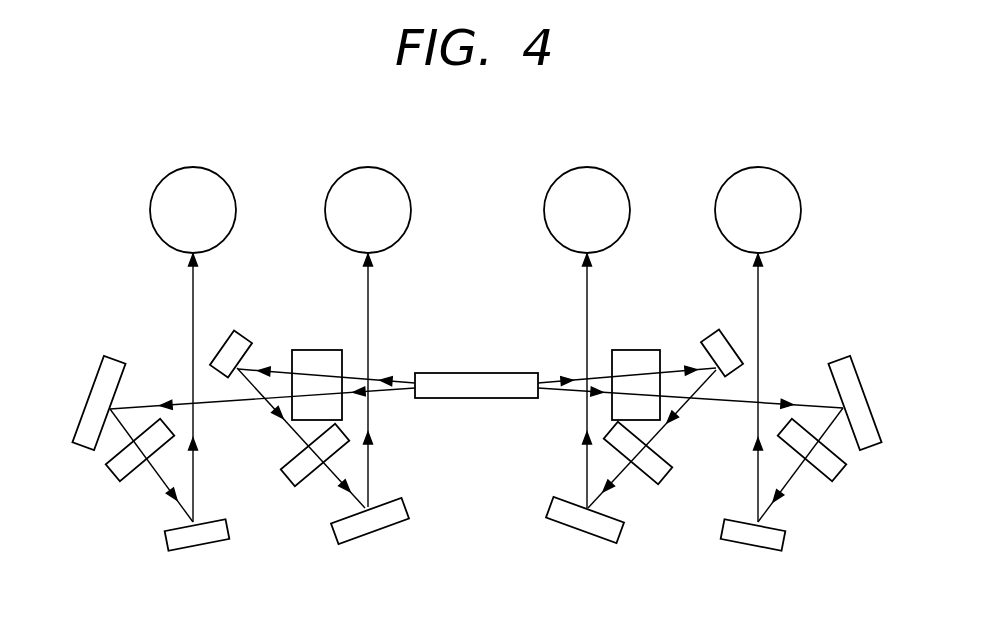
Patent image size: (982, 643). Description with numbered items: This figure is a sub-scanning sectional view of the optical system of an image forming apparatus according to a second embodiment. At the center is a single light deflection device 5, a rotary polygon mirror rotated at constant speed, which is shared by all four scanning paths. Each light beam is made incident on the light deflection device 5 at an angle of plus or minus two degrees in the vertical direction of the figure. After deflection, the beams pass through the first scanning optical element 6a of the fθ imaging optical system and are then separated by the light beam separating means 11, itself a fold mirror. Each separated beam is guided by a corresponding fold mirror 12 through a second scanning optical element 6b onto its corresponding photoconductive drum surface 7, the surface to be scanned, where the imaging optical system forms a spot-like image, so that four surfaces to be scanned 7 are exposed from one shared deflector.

The light deflection device 5 is at (478, 373).
The first scanning optical element 6a is at (328, 350).
The second scanning optical element 6b is at (105, 477).
The photoconductive drum surface 7 is at (215, 193).
The light beam separating means 11 is at (228, 333).
The fold mirror 12 is at (100, 358).